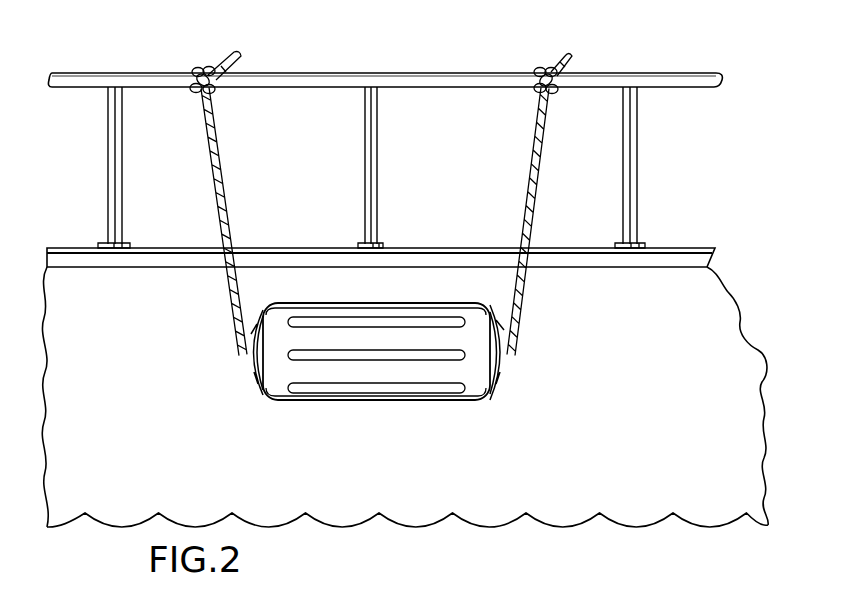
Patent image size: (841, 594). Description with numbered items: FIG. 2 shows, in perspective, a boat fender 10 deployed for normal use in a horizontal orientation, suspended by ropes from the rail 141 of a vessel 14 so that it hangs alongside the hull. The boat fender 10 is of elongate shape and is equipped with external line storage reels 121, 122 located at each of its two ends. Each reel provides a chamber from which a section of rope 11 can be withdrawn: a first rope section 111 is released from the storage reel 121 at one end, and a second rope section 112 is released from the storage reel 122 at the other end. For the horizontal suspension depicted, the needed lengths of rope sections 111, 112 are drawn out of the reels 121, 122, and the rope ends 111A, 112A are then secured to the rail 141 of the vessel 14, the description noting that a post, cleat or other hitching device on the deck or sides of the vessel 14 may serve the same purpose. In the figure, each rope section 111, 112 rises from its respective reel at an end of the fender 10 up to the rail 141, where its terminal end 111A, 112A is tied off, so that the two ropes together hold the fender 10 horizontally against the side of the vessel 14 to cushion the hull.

The boat fender 10 is at (344, 405).
The rope 11 is at (244, 290).
The rope section 111 is at (234, 209).
The rope section 112 is at (526, 200).
The rope end 111A is at (227, 54).
The rope end 112A is at (572, 55).
The storage reel 121 is at (244, 384).
The storage reel 122 is at (508, 386).
The vessel 14 is at (708, 331).
The rail 141 is at (672, 91).